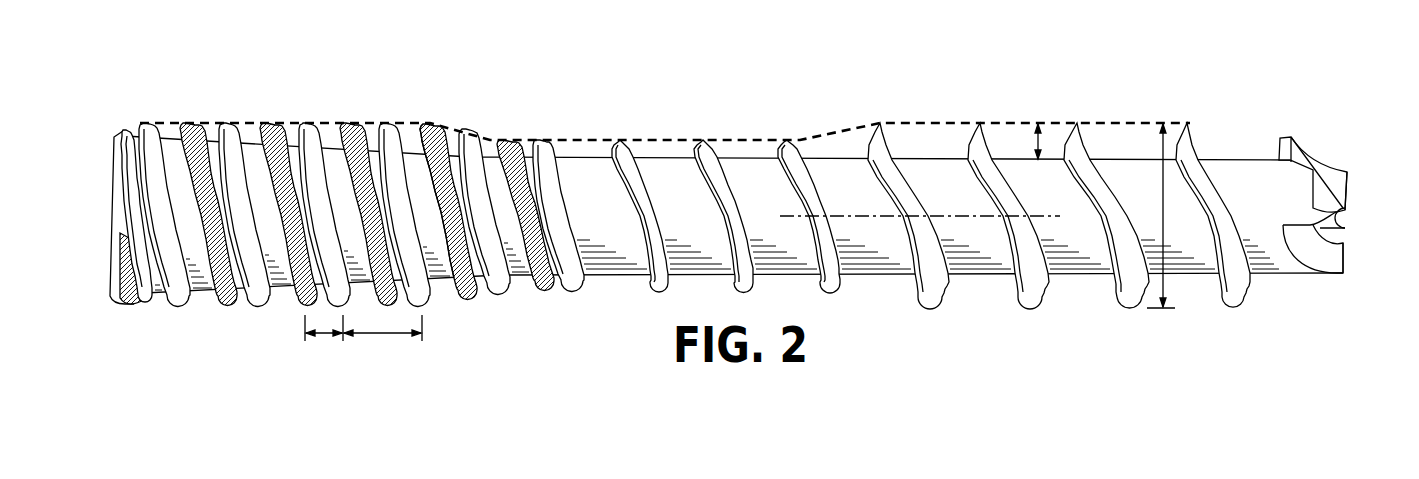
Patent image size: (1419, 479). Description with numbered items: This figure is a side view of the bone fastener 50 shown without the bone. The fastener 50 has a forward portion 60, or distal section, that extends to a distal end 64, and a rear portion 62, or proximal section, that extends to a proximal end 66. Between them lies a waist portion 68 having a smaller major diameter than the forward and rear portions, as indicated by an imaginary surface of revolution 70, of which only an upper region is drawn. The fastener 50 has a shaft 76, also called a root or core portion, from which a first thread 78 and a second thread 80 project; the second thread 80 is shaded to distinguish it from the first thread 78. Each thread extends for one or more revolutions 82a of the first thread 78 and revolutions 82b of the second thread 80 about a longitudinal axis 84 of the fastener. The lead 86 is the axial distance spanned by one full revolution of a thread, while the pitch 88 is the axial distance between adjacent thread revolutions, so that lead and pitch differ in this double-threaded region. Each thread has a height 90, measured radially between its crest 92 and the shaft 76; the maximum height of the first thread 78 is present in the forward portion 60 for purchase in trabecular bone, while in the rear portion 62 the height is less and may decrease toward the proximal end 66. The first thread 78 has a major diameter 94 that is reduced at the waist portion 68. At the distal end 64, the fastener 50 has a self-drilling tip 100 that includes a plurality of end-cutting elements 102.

The fastener 50 is at (696, 80).
The forward portion 60 is at (987, 121).
The rear portion 62 is at (277, 121).
The distal end 64 is at (1348, 200).
The proximal end 66 is at (105, 178).
The waist portion 68 is at (640, 136).
The imaginary surface of revolution 70 is at (752, 137).
The shaft 76 is at (880, 276).
The first thread 78 is at (370, 121).
The second thread 80 is at (438, 122).
The revolutions of first thread 82a is at (405, 168).
The revolutions of second thread 82b is at (445, 181).
The longitudinal axis 84 is at (858, 217).
The lead 86 is at (383, 339).
The pitch 88 is at (325, 339).
The height 90 is at (1038, 142).
The crest 92 is at (1078, 123).
The major diameter 94 is at (1160, 178).
The self-drilling tip 100 is at (1321, 150).
The end-cutting elements 102 is at (1349, 178).